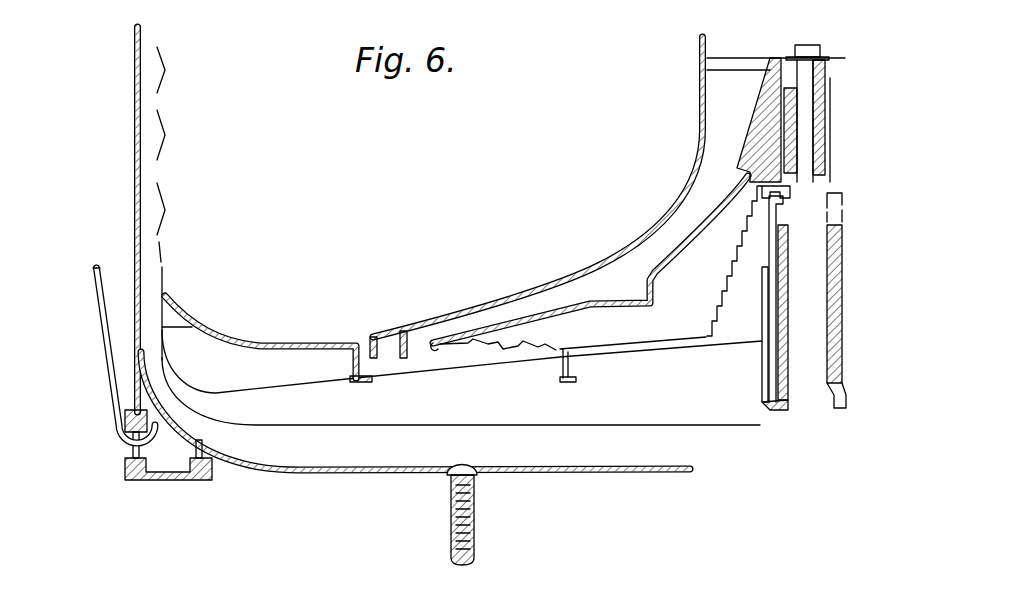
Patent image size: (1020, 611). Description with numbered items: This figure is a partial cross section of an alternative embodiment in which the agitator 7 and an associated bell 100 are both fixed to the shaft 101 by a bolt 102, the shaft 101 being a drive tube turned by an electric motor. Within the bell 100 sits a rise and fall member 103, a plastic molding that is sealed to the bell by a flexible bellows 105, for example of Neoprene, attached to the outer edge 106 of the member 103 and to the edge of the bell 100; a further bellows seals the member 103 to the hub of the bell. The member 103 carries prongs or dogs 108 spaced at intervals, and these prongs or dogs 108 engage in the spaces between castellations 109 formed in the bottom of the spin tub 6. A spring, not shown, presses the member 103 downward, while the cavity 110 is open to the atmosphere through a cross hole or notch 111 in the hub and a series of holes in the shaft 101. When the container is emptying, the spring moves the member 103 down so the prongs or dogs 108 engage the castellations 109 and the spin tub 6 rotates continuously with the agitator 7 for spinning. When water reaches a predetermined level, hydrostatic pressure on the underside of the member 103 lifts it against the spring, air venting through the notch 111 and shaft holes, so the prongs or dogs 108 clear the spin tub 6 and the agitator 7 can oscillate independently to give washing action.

The spin tub 6 is at (158, 117).
The agitator 7 is at (698, 43).
The bell 100 is at (705, 268).
The shaft 101 is at (770, 365).
The bolt 102 is at (795, 52).
The rise and fall member 103 is at (607, 342).
The flexible bellows 105 is at (505, 342).
The outer edge 106 is at (548, 355).
The prongs or dogs 108 is at (765, 115).
The castellations 109 is at (461, 392).
The cavity 110 is at (697, 317).
The cross hole or notch 111 is at (745, 182).